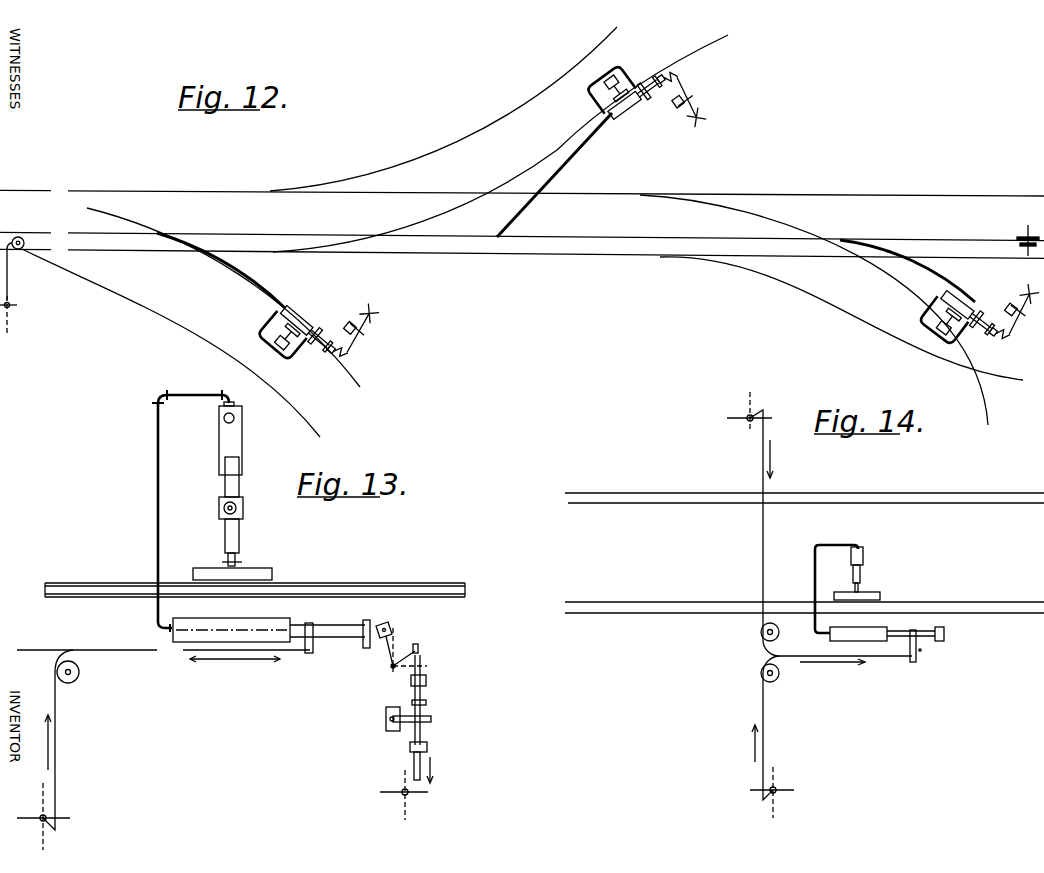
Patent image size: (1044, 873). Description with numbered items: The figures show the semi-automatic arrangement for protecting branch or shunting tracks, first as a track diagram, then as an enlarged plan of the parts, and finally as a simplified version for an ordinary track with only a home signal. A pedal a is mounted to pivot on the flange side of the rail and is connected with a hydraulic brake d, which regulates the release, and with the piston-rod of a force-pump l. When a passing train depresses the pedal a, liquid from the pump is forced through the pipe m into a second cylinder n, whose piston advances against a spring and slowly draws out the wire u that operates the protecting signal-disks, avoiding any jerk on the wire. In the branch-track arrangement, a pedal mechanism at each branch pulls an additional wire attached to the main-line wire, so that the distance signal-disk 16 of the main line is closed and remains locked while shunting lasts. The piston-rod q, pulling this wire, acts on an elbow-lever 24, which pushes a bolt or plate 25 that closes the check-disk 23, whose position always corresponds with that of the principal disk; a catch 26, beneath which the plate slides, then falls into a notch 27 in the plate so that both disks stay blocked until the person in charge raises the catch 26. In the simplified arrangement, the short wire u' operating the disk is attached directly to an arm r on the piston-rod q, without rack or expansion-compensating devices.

In FIG. 12, the wire u is at (599, 213).
In FIG. 13, the wire u is at (246, 668).
In FIG. 14, the wire u is at (846, 670).
In FIG. 13, the wire section u' is at (87, 740).
In FIG. 12, the distance signal-disk 16 is at (9, 312).
In FIG. 13, the distance signal-disk 16 is at (42, 814).
In FIG. 14, the distance signal-disk 16 is at (748, 414).
In FIG. 13, the pipe m is at (192, 395).
In FIG. 14, the pipe m is at (815, 560).
In FIG. 13, the force-pump l is at (238, 439).
In FIG. 14, the force-pump l is at (864, 553).
In FIG. 13, the hydraulic brake d is at (240, 536).
In FIG. 14, the hydraulic brake d is at (862, 578).
In FIG. 13, the pedal a is at (265, 575).
In FIG. 14, the pedal a is at (881, 598).
In FIG. 13, the second cylinder n is at (212, 620).
In FIG. 14, the second cylinder n is at (858, 633).
In FIG. 13, the piston-rod q is at (338, 632).
In FIG. 14, the piston-rod q is at (902, 628).
In FIG. 13, the arm r is at (315, 652).
In FIG. 14, the arm r is at (921, 651).
In FIG. 13, the elbow-lever 24 is at (396, 648).
In FIG. 13, the bolt or plate 25 is at (420, 655).
In FIG. 13, the catch 26 is at (432, 720).
In FIG. 13, the notch 27 is at (424, 705).
In FIG. 13, the check-disk 23 is at (402, 790).